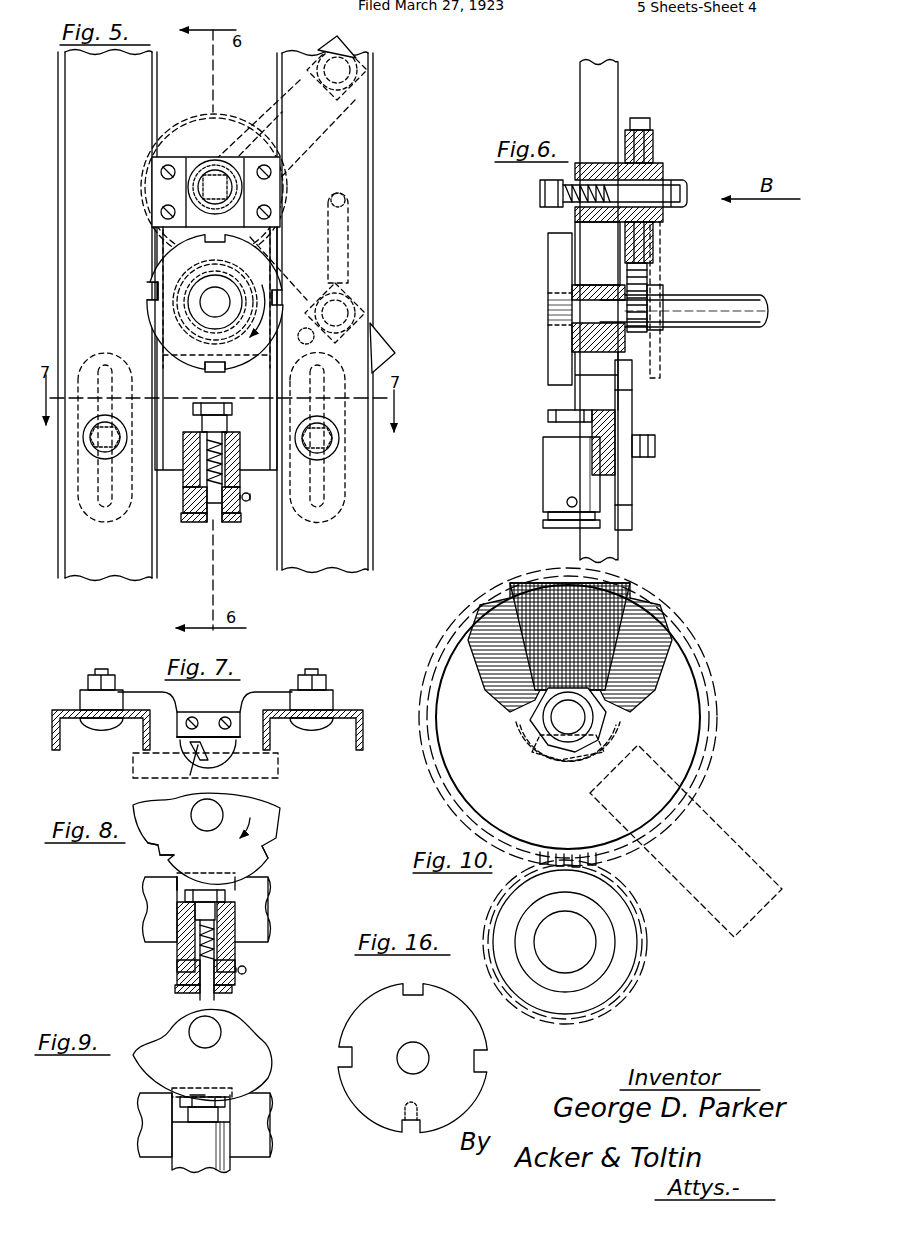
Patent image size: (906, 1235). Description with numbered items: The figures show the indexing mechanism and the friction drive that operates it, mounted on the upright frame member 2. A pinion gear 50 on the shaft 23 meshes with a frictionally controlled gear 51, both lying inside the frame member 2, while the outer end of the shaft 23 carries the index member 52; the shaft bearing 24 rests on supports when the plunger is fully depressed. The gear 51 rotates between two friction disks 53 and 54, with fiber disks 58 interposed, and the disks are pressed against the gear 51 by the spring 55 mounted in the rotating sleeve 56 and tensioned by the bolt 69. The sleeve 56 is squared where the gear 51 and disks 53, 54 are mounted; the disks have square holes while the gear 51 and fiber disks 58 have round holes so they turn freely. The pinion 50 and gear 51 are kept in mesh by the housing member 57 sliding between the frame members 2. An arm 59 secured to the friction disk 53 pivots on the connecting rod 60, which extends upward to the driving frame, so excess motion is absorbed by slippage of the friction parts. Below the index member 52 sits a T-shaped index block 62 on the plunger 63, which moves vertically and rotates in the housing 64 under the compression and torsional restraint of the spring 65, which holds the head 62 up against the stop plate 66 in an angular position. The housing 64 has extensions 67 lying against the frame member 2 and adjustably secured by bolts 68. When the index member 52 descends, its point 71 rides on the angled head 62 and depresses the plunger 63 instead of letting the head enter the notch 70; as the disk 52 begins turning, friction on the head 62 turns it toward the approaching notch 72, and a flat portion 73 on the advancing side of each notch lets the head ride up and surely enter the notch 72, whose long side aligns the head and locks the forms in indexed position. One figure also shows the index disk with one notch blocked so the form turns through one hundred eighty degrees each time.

In FIG. 5, the frame member 2 is at (345, 167).
In FIG. 6, the frame member 2 is at (598, 106).
In FIG. 7, the frame member 2 is at (345, 710).
In FIG. 5, the shaft 23 is at (222, 300).
In FIG. 6, the shaft 23 is at (690, 305).
In FIG. 10, the shaft 23 is at (578, 942).
In FIG. 8, the shaft 23 is at (210, 815).
In FIG. 9, the shaft 23 is at (210, 1032).
In FIG. 6, the bearing 24 is at (638, 350).
In FIG. 5, the pinion gear 50 is at (243, 280).
In FIG. 6, the pinion gear 50 is at (650, 282).
In FIG. 10, the pinion gear 50 is at (640, 960).
In FIG. 5, the frictionally controlled gear 51 is at (290, 188).
In FIG. 6, the frictionally controlled gear 51 is at (655, 255).
In FIG. 10, the frictionally controlled gear 51 is at (598, 605).
In FIG. 5, the index member 52 is at (165, 268).
In FIG. 6, the index member 52 is at (555, 268).
In FIG. 8, the index member 52 is at (262, 820).
In FIG. 9, the index member 52 is at (243, 1052).
In FIG. 6, the friction disk 53 is at (653, 150).
In FIG. 10, the friction disk 53 is at (668, 720).
In FIG. 6, the friction disk 54 is at (652, 124).
In FIG. 10, the friction disk 54 is at (598, 693).
In FIG. 6, the spring 55 is at (570, 200).
In FIG. 6, the rotating sleeve 56 is at (575, 212).
In FIG. 5, the housing member 57 is at (255, 248).
In FIG. 6, the housing member 57 is at (597, 253).
In FIG. 6, the fiber disk 58 is at (663, 170).
In FIG. 10, the fiber disk 58 is at (642, 632).
In FIG. 5, the arm 59 is at (362, 38).
In FIG. 6, the arm 59 is at (662, 246).
In FIG. 5, the connecting rod 60 is at (415, 243).
In FIG. 5, the index block 62 is at (226, 410).
In FIG. 6, the index block 62 is at (548, 416).
In FIG. 7, the index block 62 is at (240, 768).
In FIG. 8, the index block 62 is at (228, 897).
In FIG. 9, the index block 62 is at (226, 1102).
In FIG. 5, the plunger 63 is at (222, 420).
In FIG. 6, the plunger 63 is at (570, 430).
In FIG. 8, the plunger 63 is at (212, 915).
In FIG. 9, the plunger 63 is at (220, 1114).
In FIG. 5, the housing 64 is at (250, 460).
In FIG. 6, the housing 64 is at (565, 455).
In FIG. 7, the housing 64 is at (280, 775).
In FIG. 8, the housing 64 is at (236, 952).
In FIG. 9, the housing 64 is at (240, 1140).
In FIG. 5, the spring 65 is at (232, 482).
In FIG. 8, the spring 65 is at (222, 960).
In FIG. 5, the stop plate 66 is at (216, 348).
In FIG. 6, the stop plate 66 is at (576, 410).
In FIG. 7, the stop plate 66 is at (205, 718).
In FIG. 8, the stop plate 66 is at (230, 876).
In FIG. 9, the stop plate 66 is at (232, 1092).
In FIG. 6, the extension 67 is at (625, 410).
In FIG. 7, the extension 67 is at (90, 688).
In FIG. 5, the bolt 68 is at (330, 438).
In FIG. 6, the bolt 68 is at (656, 445).
In FIG. 7, the bolt 68 is at (110, 670).
In FIG. 5, the bolt 69 is at (222, 190).
In FIG. 6, the bolt 69 is at (688, 193).
In FIG. 10, the bolt 69 is at (578, 720).
In FIG. 5, the notch 70 is at (215, 370).
In FIG. 8, the notch 70 is at (172, 860).
In FIG. 5, the point 71 is at (212, 384).
In FIG. 8, the point 71 is at (180, 887).
In FIG. 5, the notch 72 is at (285, 302).
In FIG. 8, the notch 72 is at (262, 850).
In FIG. 9, the notch 72 is at (190, 1098).
In FIG. 5, the flat portion 73 is at (142, 286).
In FIG. 8, the flat portion 73 is at (145, 863).